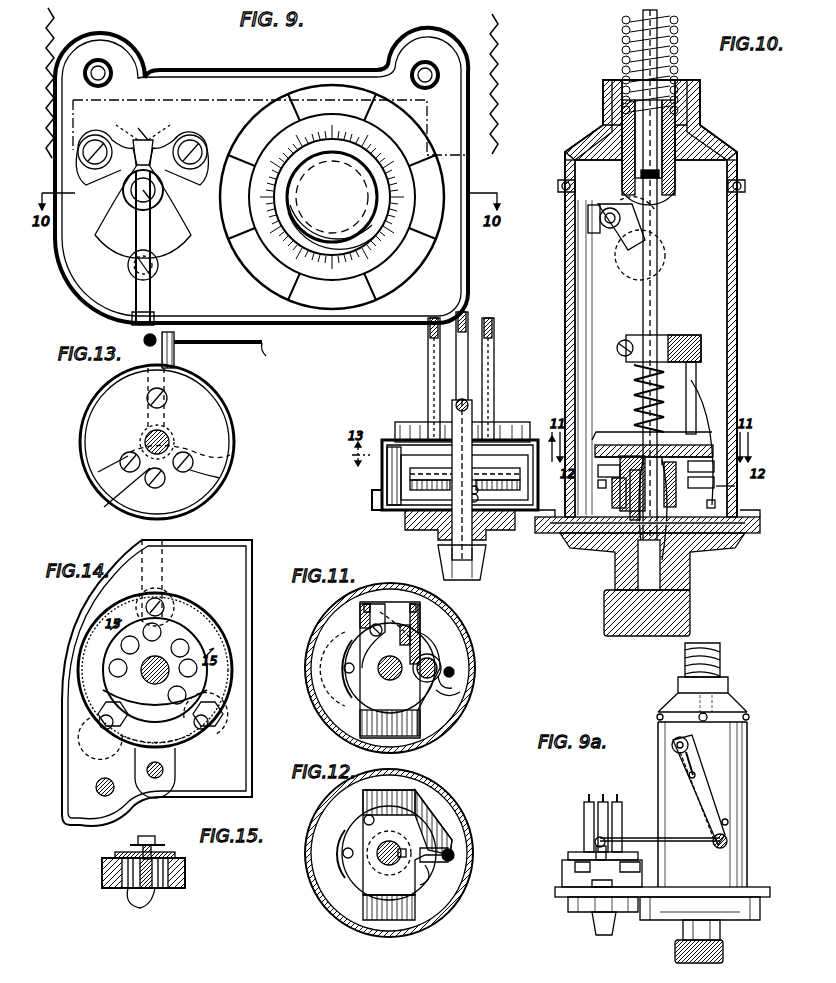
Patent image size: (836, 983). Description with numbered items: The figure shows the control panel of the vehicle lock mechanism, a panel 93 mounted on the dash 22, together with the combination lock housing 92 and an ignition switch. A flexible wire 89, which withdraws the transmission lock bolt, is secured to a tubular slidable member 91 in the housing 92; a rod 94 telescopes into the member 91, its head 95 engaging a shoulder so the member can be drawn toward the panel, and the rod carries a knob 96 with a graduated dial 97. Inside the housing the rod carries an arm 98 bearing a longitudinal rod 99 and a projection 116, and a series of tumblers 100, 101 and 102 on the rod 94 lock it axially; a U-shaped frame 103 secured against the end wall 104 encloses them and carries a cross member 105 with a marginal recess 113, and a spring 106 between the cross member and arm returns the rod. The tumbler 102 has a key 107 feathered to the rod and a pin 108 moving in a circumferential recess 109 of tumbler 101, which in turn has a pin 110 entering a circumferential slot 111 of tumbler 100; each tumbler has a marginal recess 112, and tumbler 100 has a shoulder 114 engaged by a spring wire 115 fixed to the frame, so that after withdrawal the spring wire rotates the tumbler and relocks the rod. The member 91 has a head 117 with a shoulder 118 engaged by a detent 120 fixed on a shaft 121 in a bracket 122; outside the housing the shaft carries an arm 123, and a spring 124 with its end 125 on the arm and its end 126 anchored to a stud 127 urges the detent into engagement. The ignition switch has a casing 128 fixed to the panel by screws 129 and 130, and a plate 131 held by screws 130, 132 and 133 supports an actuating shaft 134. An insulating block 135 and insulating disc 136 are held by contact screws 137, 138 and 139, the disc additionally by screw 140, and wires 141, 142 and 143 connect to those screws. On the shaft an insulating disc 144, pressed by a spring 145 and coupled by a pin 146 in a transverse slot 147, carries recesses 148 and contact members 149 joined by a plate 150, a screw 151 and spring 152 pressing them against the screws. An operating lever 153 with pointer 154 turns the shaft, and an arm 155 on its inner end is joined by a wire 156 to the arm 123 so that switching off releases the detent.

In FIG. 9, the dash 22 is at (494, 48).
In FIG. 9, the graduated dial 97 is at (276, 110).
In FIG. 9, the knob 96 is at (333, 170).
In FIG. 10, the knob 96 is at (692, 606).
In FIG. 9A, the knob 96 is at (723, 952).
In FIG. 9, the panel 93 is at (289, 307).
In FIG. 14, the panel 93 is at (220, 548).
In FIG. 10, the panel 93 is at (380, 508).
In FIG. 9A, the panel 93 is at (557, 892).
In FIG. 9, the plate 131 is at (112, 228).
In FIG. 10, the plate 131 is at (405, 522).
In FIG. 9, the screw 132 is at (95, 138).
In FIG. 9, the screw 133 is at (190, 138).
In FIG. 9, the pointer 154 is at (142, 142).
In FIG. 9, the actuating shaft 134 is at (168, 205).
In FIG. 13, the actuating shaft 134 is at (145, 437).
In FIG. 14, the actuating shaft 134 is at (140, 672).
In FIG. 10, the actuating shaft 134 is at (452, 540).
In FIG. 9, the screw 130 is at (162, 278).
In FIG. 14, the screw 130 is at (168, 600).
In FIG. 9, the operating lever 153 is at (132, 312).
In FIG. 9A, the operating lever 153 is at (594, 928).
In FIG. 13, the arm 155 is at (176, 358).
In FIG. 9A, the arm 155 is at (596, 840).
In FIG. 13, the wire 156 is at (220, 356).
In FIG. 9A, the wire 156 is at (648, 834).
In FIG. 13, the disc 136 is at (100, 410).
In FIG. 10, the disc 136 is at (390, 445).
In FIG. 13, the casing 128 is at (233, 428).
In FIG. 14, the casing 128 is at (185, 612).
In FIG. 10, the casing 128 is at (400, 476).
In FIG. 9A, the casing 128 is at (562, 870).
In FIG. 13, the block 135 is at (212, 460).
In FIG. 10, the block 135 is at (394, 422).
In FIG. 13, the screw 140 is at (148, 398).
In FIG. 13, the contact screw 137 is at (120, 466).
In FIG. 10, the contact screw 137 is at (428, 412).
In FIG. 13, the contact screw 138 is at (140, 492).
In FIG. 13, the contact screw 139 is at (222, 478).
In FIG. 10, the contact screw 139 is at (496, 404).
In FIG. 14, the disc 144 is at (200, 668).
In FIG. 15, the disc 144 is at (185, 872).
In FIG. 10, the disc 144 is at (479, 468).
In FIG. 14, the contact members 149 is at (162, 636).
In FIG. 15, the contact members 149 is at (140, 908).
In FIG. 14, the recesses 148 is at (182, 698).
In FIG. 14, the screw 129 is at (165, 770).
In FIG. 15, the plate 150 is at (115, 855).
In FIG. 15, the screw 151 is at (147, 836).
In FIG. 15, the spring 152 is at (138, 843).
In FIG. 10, the housing 92 is at (737, 278).
In FIG. 11, the housing 92 is at (420, 738).
In FIG. 12, the housing 92 is at (316, 892).
In FIG. 10, the wire 89 is at (622, 22).
In FIG. 10, the rod 94 is at (658, 295).
In FIG. 11, the rod 94 is at (396, 674).
In FIG. 12, the rod 94 is at (380, 858).
In FIG. 10, the head 117 is at (670, 206).
In FIG. 10, the slidable member 91 is at (660, 126).
In FIG. 10, the head 95 is at (662, 163).
In FIG. 10, the shaft 121 is at (600, 214).
In FIG. 9A, the shaft 121 is at (672, 742).
In FIG. 10, the detent 120 is at (620, 240).
In FIG. 10, the bracket 122 is at (588, 220).
In FIG. 10, the shoulder 118 is at (625, 200).
In FIG. 10, the projection 116 is at (700, 355).
In FIG. 10, the arm 98 is at (630, 340).
In FIG. 10, the spring 106 is at (634, 380).
In FIG. 10, the rod 99 is at (698, 400).
In FIG. 11, the rod 99 is at (440, 680).
In FIG. 10, the spring wire 115 is at (710, 420).
In FIG. 11, the spring wire 115 is at (455, 672).
In FIG. 12, the spring wire 115 is at (455, 854).
In FIG. 10, the cross member 105 is at (618, 430).
In FIG. 11, the cross member 105 is at (425, 650).
In FIG. 10, the tumbler 100 is at (600, 444).
In FIG. 11, the tumbler 100 is at (352, 704).
In FIG. 10, the pin 108 is at (612, 486).
In FIG. 11, the pin 108 is at (345, 666).
In FIG. 12, the pin 108 is at (344, 852).
In FIG. 10, the tumbler 101 is at (668, 495).
In FIG. 12, the tumbler 101 is at (415, 820).
In FIG. 10, the tumbler 102 is at (716, 484).
In FIG. 12, the tumbler 102 is at (372, 862).
In FIG. 10, the key 107 is at (680, 492).
In FIG. 10, the end wall 104 is at (760, 522).
In FIG. 10, the frame 103 is at (690, 510).
In FIG. 11, the frame 103 is at (420, 622).
In FIG. 12, the frame 103 is at (380, 920).
In FIG. 10, the ignition circuit wire 141 is at (428, 322).
In FIG. 9A, the ignition circuit wire 141 is at (588, 798).
In FIG. 10, the wire 142 is at (462, 312).
In FIG. 9A, the wire 142 is at (603, 794).
In FIG. 10, the wire 143 is at (494, 322).
In FIG. 9A, the wire 143 is at (618, 798).
In FIG. 10, the spring 145 is at (480, 500).
In FIG. 10, the pin 146 is at (410, 484).
In FIG. 10, the transverse slot 147 is at (510, 488).
In FIG. 11, the pin 110 is at (370, 628).
In FIG. 12, the pin 110 is at (364, 818).
In FIG. 11, the circumferential slot 111 is at (348, 684).
In FIG. 11, the marginal recess 113 is at (445, 660).
In FIG. 11, the shoulder 114 is at (458, 690).
In FIG. 12, the circumferential recess 109 is at (348, 830).
In FIG. 12, the marginal recess 112 is at (430, 872).
In FIG. 9A, the arm 123 is at (710, 790).
In FIG. 9A, the end 125 is at (695, 770).
In FIG. 9A, the spring 124 is at (702, 805).
In FIG. 9A, the stud 127 is at (728, 822).
In FIG. 9A, the end 126 is at (728, 838).